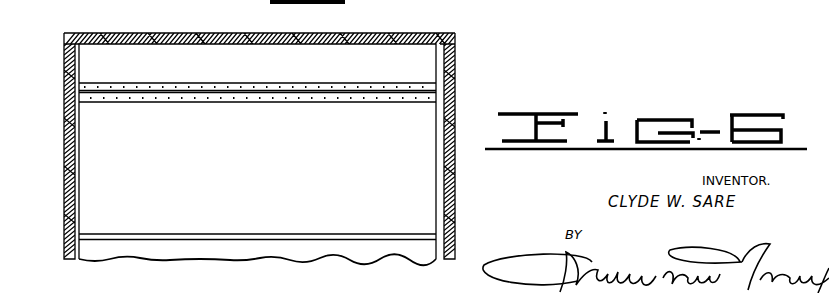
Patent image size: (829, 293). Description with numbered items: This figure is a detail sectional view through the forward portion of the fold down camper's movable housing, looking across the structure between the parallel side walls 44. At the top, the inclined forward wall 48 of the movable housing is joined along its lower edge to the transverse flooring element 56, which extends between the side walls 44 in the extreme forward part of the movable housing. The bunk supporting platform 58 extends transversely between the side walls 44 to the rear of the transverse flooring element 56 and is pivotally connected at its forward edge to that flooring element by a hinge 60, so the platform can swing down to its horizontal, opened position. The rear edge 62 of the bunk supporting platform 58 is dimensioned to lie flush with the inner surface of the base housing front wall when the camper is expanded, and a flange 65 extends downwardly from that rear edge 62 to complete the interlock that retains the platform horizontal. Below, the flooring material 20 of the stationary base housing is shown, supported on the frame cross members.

The flooring material 20 is at (313, 248).
The side walls 44 is at (64, 146).
The forward wall 48 is at (255, 33).
The transverse flooring element 56 is at (162, 57).
The bunk supporting platform 58 is at (273, 181).
The hinge 60 is at (290, 92).
The rear edge 62 is at (382, 208).
The flange 65 is at (233, 213).